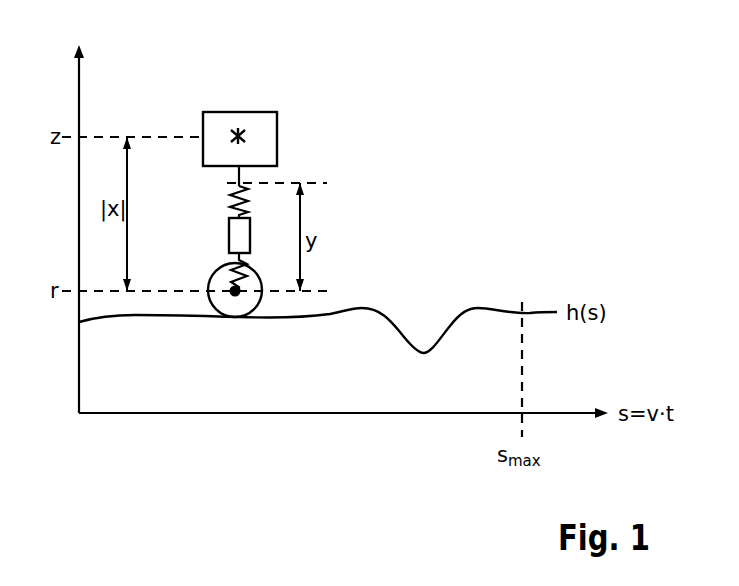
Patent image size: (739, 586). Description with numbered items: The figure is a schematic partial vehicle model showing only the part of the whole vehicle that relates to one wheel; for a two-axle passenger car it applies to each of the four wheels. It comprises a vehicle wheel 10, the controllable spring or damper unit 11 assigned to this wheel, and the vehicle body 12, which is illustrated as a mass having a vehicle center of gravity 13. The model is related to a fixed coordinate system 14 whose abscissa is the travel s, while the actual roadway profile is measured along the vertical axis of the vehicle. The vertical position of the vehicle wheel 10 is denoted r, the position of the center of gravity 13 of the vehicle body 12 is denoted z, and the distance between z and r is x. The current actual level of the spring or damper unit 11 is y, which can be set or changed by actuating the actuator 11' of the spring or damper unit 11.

The vehicle wheel 10 is at (245, 308).
The spring or damper unit 11 is at (315, 208).
The actuator 11' is at (209, 233).
The vehicle body 12 is at (277, 108).
The vehicle center of gravity 13 is at (238, 136).
The fixed coordinate system 14 is at (112, 413).